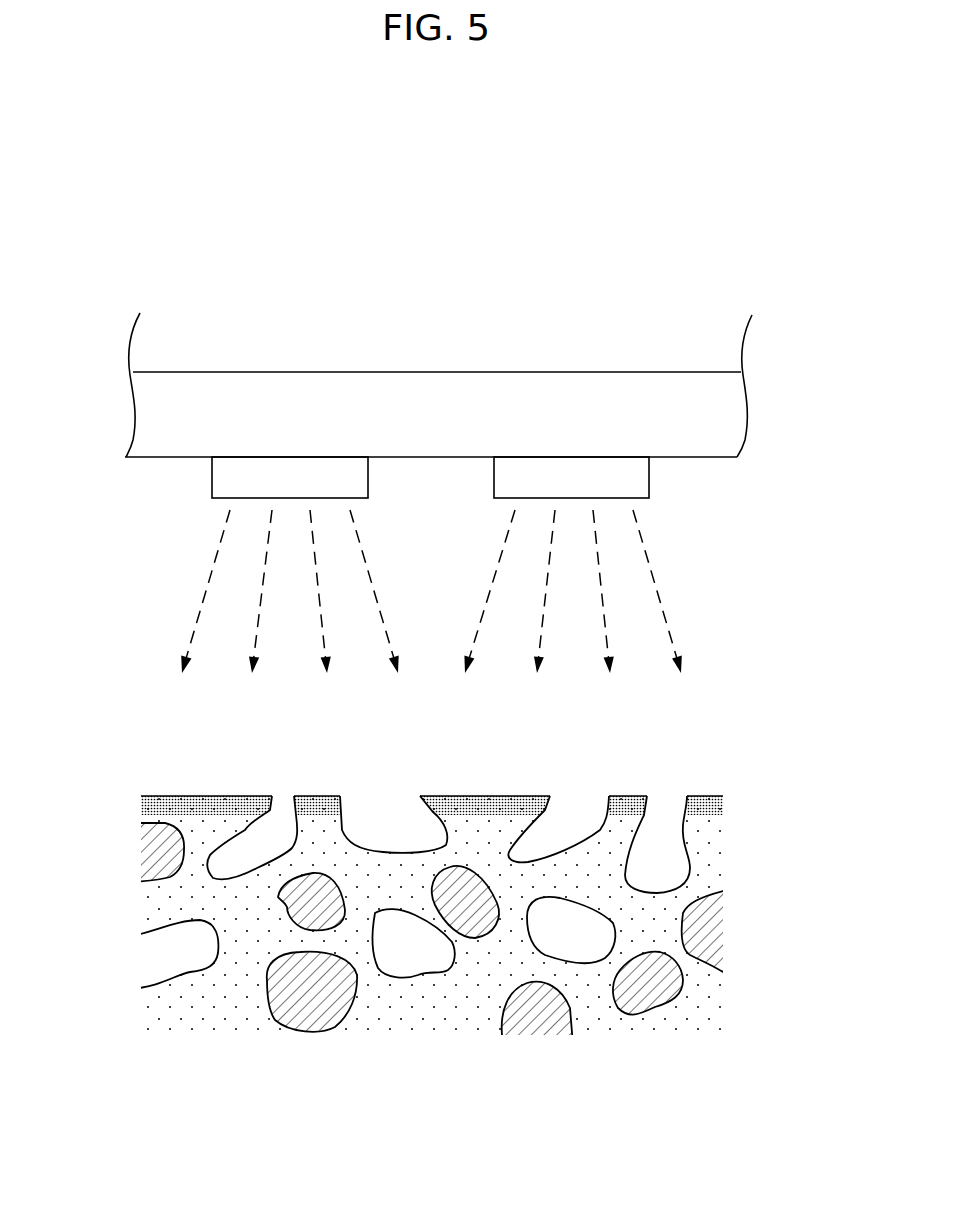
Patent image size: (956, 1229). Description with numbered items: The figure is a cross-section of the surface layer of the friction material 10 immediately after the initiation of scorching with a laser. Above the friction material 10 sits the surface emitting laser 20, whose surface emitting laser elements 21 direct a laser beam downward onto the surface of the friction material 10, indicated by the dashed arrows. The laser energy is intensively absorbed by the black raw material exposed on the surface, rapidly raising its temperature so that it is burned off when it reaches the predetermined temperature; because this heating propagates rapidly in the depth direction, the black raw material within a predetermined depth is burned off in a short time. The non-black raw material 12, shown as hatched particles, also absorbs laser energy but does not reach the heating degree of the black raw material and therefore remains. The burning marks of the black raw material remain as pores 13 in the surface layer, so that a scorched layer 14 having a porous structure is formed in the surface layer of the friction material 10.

The surface emitting laser 20 is at (113, 316).
The surface emitting laser element 21 is at (210, 478).
The friction material 10 is at (195, 796).
The pore 13 is at (395, 815).
The scorched layer 14 is at (463, 906).
The non-black raw friction material 12 is at (310, 1000).